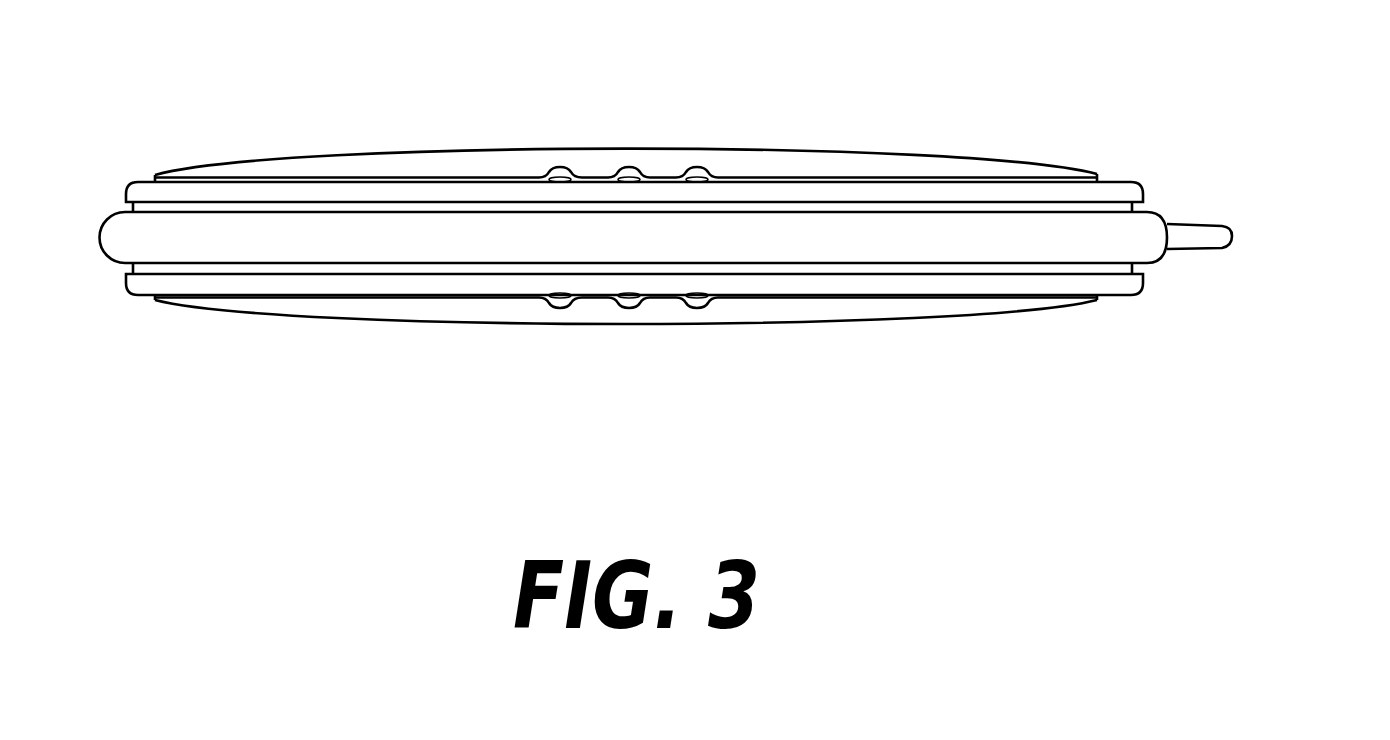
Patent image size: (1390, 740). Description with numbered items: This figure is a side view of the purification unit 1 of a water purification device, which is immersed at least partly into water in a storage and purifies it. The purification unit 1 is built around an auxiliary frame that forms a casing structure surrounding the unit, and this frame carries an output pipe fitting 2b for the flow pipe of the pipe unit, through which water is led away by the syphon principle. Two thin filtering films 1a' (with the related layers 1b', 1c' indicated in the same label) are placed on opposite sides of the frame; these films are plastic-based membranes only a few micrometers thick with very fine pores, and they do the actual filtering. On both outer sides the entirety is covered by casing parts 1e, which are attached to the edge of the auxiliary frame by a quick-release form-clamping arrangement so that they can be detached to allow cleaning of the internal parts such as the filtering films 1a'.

The purification unit 1 is at (866, 95).
The thin filtering film 1a' is at (753, 124).
The middle body layer 1b' is at (634, 237).
The lower plate layer 1c' is at (634, 279).
The casing part 1e is at (873, 170).
The output pipe fitting 2b is at (1197, 240).